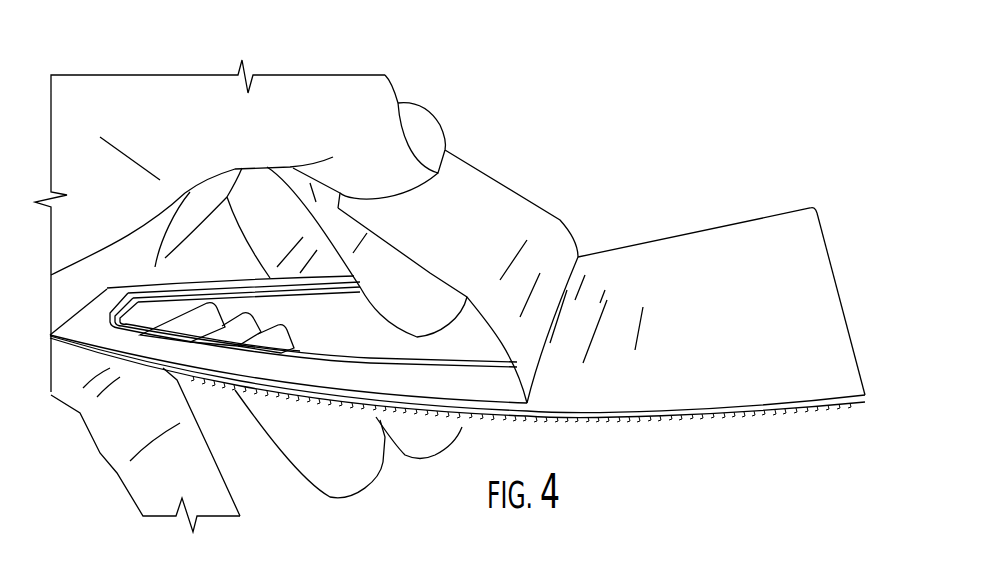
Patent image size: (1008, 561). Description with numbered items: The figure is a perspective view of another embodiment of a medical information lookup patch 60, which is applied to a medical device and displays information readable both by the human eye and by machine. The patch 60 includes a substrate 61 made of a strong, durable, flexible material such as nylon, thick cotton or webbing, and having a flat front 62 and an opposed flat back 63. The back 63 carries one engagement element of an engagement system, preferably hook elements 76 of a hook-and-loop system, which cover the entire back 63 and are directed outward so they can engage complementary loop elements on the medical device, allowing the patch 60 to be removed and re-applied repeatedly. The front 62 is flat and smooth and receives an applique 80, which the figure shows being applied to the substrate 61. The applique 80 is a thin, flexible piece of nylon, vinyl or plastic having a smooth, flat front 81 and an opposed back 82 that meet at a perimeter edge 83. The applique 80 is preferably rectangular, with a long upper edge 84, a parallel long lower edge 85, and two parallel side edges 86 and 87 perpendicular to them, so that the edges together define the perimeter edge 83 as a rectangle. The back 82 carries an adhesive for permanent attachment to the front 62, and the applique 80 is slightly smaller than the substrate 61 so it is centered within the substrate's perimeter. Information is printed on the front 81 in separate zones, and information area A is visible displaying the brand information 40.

The patch 60 is at (783, 77).
The substrate 61 is at (827, 233).
The front 62 is at (795, 223).
The back 63 is at (832, 412).
The hook element 76 is at (865, 402).
The applique 80 is at (505, 183).
The back 82 is at (520, 213).
The perimeter edge 83 is at (50, 335).
The upper edge 84 is at (225, 290).
The lower edge 85 is at (100, 448).
The side edge 86 is at (107, 287).
The side edge 87 is at (340, 192).
The front 81 is at (112, 345).
The brand information 40 is at (163, 295).
The information area A is at (203, 280).